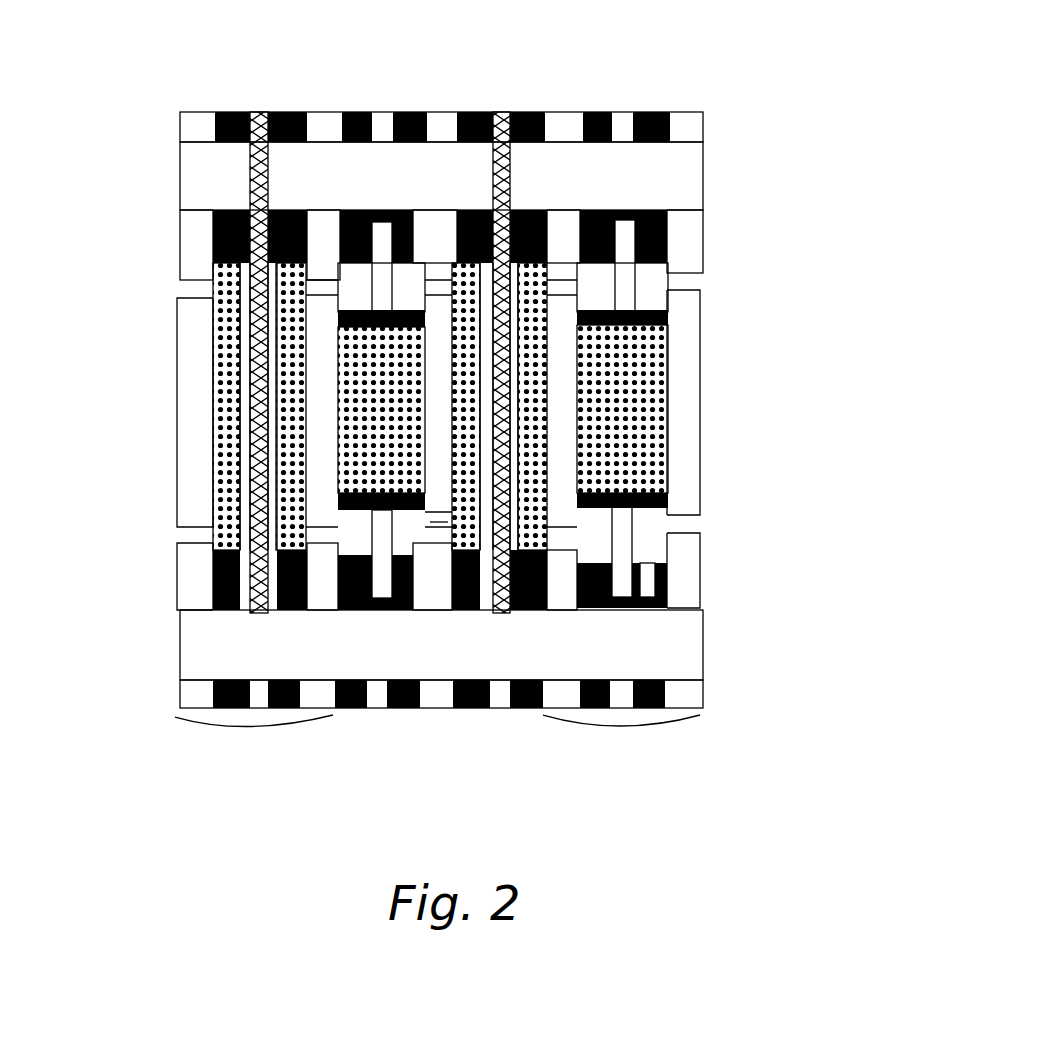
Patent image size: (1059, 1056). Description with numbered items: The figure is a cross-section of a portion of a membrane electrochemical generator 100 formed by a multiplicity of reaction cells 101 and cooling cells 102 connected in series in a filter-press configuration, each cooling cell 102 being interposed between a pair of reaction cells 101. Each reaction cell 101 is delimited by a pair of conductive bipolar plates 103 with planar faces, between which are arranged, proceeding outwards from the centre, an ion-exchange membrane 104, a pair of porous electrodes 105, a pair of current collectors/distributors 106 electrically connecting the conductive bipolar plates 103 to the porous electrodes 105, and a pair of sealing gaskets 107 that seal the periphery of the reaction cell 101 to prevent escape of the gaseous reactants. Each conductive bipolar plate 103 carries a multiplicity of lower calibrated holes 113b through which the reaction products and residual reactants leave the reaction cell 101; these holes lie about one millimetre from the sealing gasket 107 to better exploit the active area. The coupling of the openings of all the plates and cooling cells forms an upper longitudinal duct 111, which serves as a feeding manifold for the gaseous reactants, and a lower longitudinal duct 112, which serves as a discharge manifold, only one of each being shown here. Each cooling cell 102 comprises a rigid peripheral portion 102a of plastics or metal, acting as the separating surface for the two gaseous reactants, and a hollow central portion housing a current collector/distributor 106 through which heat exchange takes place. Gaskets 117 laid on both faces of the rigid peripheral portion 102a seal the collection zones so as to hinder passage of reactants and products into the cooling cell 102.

The membrane electrochemical generator 100 is at (592, 91).
The reaction cell 101 is at (254, 743).
The cooling cell 102 is at (621, 746).
The rigid peripheral portion 102a is at (660, 268).
The conductive bipolar plate 103 is at (187, 323).
The ion-exchange membrane 104 is at (262, 112).
The porous electrode 105 is at (512, 423).
The current collector/distributor 106 is at (367, 398).
The sealing gasket 107 is at (232, 112).
The upper longitudinal duct 111 is at (672, 175).
The lower longitudinal duct 112 is at (680, 650).
The lower calibrated hole 113b is at (690, 527).
The gasket 117 is at (400, 108).